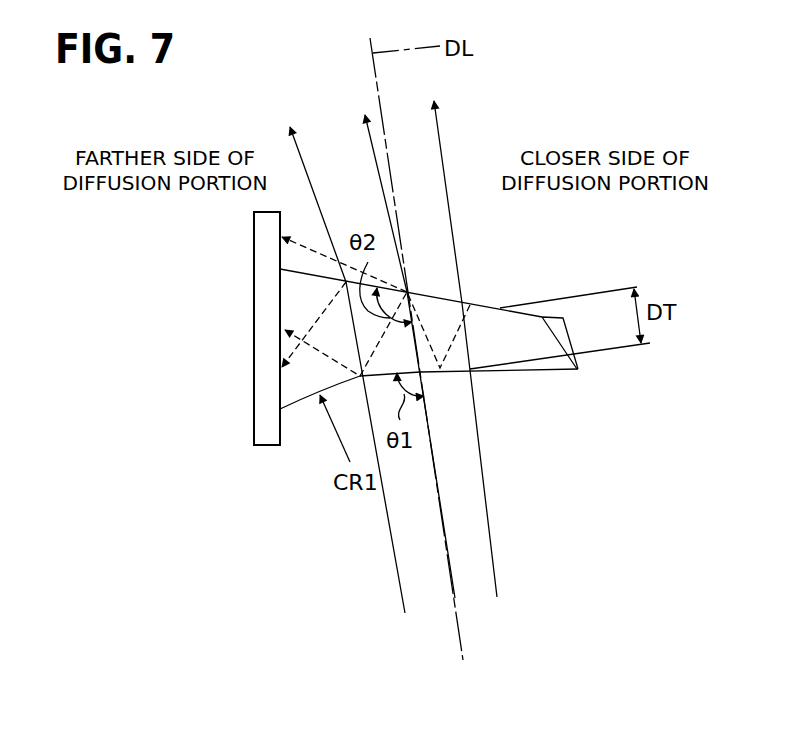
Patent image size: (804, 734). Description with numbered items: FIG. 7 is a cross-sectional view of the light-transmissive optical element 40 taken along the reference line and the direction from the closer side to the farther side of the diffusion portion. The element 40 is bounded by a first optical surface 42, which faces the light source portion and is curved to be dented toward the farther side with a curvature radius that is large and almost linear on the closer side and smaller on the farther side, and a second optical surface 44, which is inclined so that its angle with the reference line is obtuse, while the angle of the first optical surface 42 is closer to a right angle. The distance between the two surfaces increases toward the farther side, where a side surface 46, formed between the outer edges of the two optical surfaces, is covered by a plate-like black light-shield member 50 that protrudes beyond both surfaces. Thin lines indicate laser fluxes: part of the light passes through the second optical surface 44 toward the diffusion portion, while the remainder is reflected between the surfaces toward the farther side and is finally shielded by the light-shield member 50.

The light-transmissive optical element 40 is at (418, 327).
The first optical surface 42 is at (523, 370).
The second optical surface 44 is at (483, 306).
The side surface 46 is at (580, 369).
The light-shield member 50 is at (265, 450).